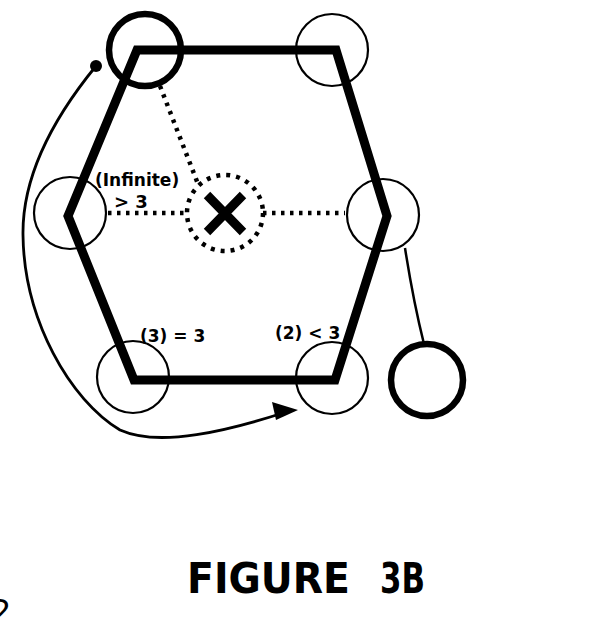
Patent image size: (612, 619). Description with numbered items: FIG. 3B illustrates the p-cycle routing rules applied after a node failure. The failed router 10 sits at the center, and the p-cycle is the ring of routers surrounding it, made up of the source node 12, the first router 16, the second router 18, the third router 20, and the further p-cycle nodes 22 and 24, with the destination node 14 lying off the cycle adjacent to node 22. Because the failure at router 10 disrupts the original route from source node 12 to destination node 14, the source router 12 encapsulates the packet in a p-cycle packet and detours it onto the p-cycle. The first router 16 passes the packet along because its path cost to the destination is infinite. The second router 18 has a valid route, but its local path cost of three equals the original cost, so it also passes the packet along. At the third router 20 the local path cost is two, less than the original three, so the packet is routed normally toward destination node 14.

The failed router node 10 is at (243, 182).
The source node 12 is at (108, 33).
The destination node 14 is at (433, 416).
The first router 16 is at (57, 249).
The second router 18 is at (125, 413).
The third router 20 is at (333, 414).
The p-cycle node 22 is at (410, 182).
The p-cycle node 24 is at (367, 55).